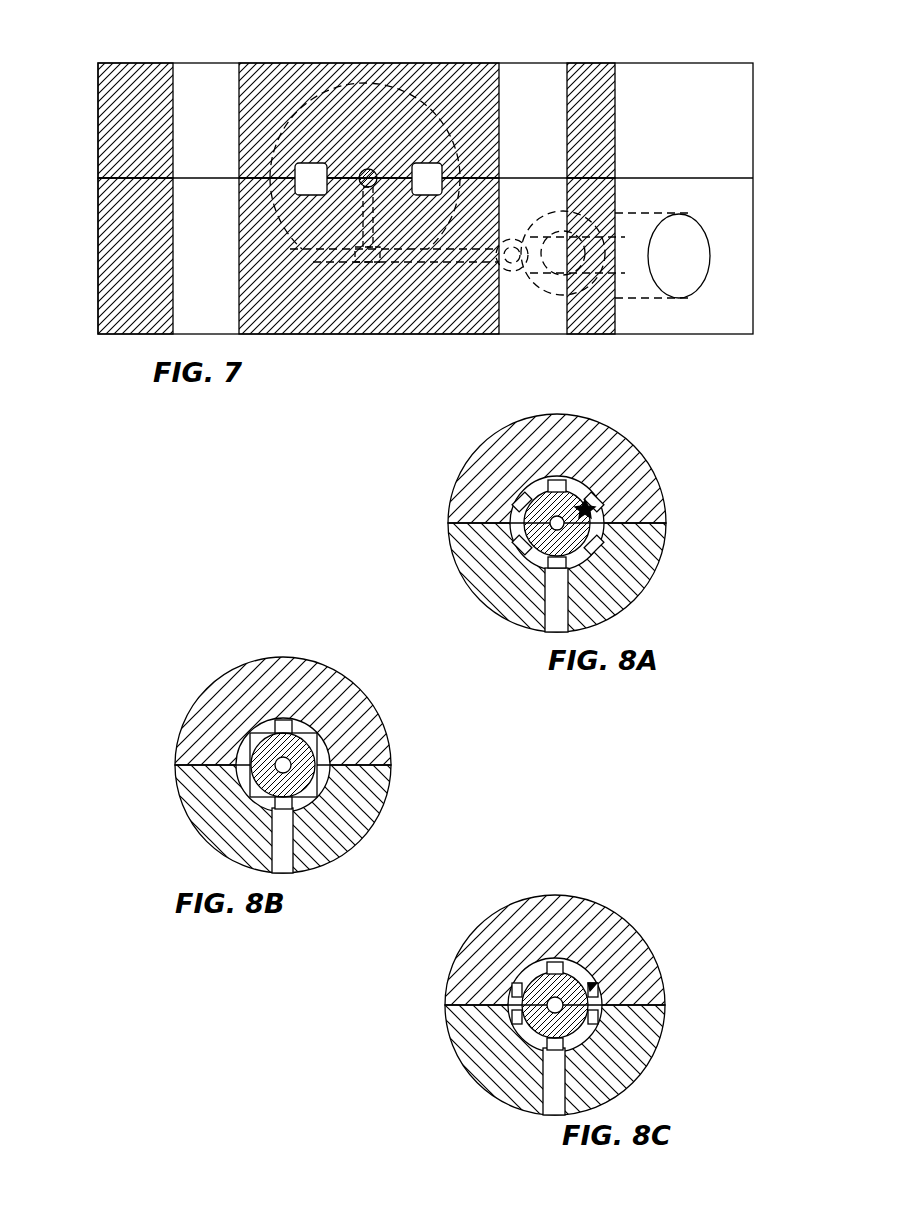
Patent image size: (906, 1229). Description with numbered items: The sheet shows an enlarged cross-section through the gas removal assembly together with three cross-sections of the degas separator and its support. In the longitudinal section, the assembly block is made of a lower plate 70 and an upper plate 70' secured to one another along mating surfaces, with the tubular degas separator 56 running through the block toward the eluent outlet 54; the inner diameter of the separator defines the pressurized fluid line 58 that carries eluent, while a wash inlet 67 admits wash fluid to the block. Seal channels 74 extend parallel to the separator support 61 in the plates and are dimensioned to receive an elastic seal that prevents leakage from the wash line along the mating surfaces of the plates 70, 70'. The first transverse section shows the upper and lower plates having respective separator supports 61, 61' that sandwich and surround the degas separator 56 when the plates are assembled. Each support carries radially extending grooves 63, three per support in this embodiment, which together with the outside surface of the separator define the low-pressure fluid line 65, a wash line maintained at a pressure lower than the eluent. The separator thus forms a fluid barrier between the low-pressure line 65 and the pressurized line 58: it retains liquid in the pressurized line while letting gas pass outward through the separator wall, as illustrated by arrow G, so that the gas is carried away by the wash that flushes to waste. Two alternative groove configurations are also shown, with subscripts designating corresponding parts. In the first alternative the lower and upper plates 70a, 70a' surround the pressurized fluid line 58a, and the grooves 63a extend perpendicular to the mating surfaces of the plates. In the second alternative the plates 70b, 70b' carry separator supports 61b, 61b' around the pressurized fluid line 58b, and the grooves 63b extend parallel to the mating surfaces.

In FIG. 7, the lower plate 70 is at (387, 198).
In FIG. 8A, the lower plate 70 is at (583, 577).
In FIG. 7, the upper plate 70' is at (318, 117).
In FIG. 8A, the upper plate 70' is at (579, 465).
In FIG. 7, the eluent outlet 54 is at (320, 88).
In FIG. 7, the tubular degas separator 56 is at (366, 190).
In FIG. 8A, the pressurized fluid line 58 is at (535, 525).
In FIG. 8B, the pressurized fluid line 58a is at (273, 745).
In FIG. 8C, the pressurized fluid line 58b is at (543, 988).
In FIG. 7, the separator support 61 is at (410, 104).
In FIG. 8A, the separator support 61 is at (496, 629).
In FIG. 8B, the separator support 61 is at (206, 843).
In FIG. 8A, the lower separator support 61' is at (554, 465).
In FIG. 8C, the separator support 61b is at (485, 1094).
In FIG. 8B, the separator support 61b' is at (337, 720).
In FIG. 8C, the separator support 61b' is at (601, 966).
In FIG. 8A, the grooves 63 is at (562, 487).
In FIG. 8B, the grooves 63a is at (285, 726).
In FIG. 8C, the grooves 63b is at (597, 985).
In FIG. 8A, the low-pressure fluid line 65 is at (525, 503).
In FIG. 7, the wash inlet 67 is at (694, 225).
In FIG. 7, the seal channels 74 is at (427, 166).
In FIG. 8A, the arrow G is at (560, 521).
In FIG. 8B, the lower plate 70a is at (290, 828).
In FIG. 8B, the upper plate 70a' is at (320, 711).
In FIG. 8C, the lower plate 70b is at (592, 1060).
In FIG. 8C, the upper plate 70b' is at (566, 928).